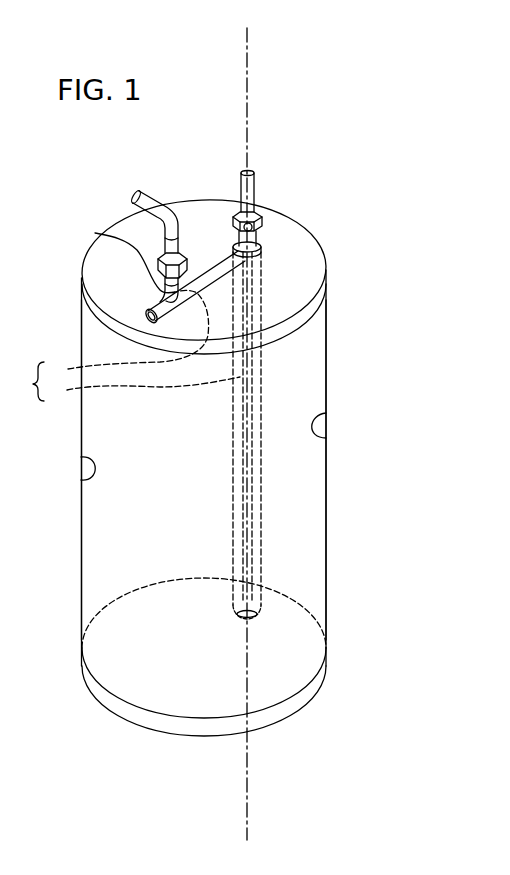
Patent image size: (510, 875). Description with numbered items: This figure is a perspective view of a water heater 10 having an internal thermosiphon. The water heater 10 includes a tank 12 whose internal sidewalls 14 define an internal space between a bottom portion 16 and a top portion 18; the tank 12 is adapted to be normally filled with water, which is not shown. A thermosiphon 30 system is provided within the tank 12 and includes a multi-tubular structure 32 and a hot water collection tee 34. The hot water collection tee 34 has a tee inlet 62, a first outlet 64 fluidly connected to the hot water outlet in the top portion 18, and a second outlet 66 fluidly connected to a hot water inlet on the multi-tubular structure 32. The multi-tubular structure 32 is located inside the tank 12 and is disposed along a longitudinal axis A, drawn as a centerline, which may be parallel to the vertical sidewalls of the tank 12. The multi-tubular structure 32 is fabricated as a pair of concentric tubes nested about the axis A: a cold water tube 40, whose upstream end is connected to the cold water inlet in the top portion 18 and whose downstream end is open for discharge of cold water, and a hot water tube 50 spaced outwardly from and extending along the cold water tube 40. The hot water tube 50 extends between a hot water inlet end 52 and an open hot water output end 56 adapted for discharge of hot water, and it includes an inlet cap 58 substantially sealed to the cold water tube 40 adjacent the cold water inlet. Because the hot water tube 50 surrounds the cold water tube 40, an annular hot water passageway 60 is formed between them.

The longitudinal axis A is at (247, 70).
The water heater 10 is at (305, 173).
The tank 12 is at (326, 460).
The internal sidewalls 14 is at (326, 438).
The bottom portion 16 is at (272, 677).
The top portion 18 is at (312, 317).
The thermosiphon 30 is at (29, 381).
The multi-tubular structure 32 is at (142, 388).
The hot water collection tee 34 is at (215, 265).
The cold water tube 40 is at (253, 605).
The hot water tube 50 is at (262, 582).
The hot water inlet end 52 is at (263, 266).
The hot water output end 56 is at (252, 624).
The inlet cap 58 is at (228, 262).
The annular hot water passageway 60 is at (262, 555).
The tee inlet 62 is at (140, 314).
The first outlet 64 is at (100, 237).
The second outlet 66 is at (260, 262).